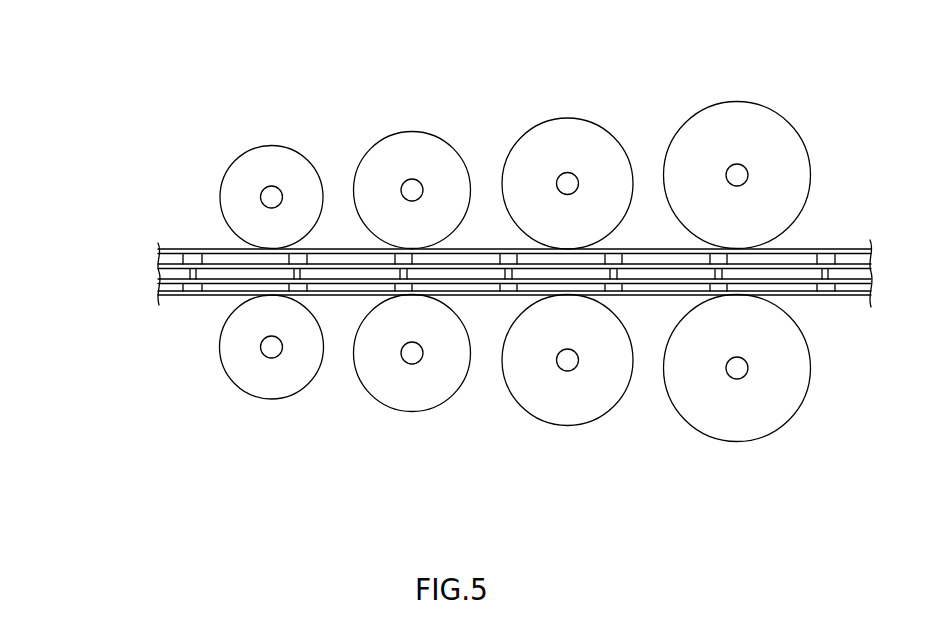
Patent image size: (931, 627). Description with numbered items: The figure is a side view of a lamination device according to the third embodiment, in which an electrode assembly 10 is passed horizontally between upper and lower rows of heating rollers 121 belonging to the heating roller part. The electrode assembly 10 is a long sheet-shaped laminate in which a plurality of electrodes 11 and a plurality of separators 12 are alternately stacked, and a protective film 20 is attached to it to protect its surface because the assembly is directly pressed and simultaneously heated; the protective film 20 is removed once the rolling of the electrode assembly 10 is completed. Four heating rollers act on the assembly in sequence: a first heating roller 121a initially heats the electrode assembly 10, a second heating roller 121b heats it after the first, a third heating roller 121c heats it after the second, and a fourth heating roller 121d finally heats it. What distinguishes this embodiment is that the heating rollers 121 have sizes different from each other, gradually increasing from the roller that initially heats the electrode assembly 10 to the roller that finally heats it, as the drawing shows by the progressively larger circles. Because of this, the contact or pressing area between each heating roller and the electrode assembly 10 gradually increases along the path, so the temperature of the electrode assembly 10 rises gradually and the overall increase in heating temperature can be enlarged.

The electrode assembly 10 is at (88, 203).
The electrode 11 is at (170, 272).
The separator 12 is at (217, 278).
The protective film 20 is at (850, 295).
The heating rollers 121 is at (744, 46).
The first heating roller 121a is at (273, 162).
The second heating roller 121b is at (418, 148).
The third heating roller 121c is at (573, 135).
The fourth heating roller 121d is at (743, 120).